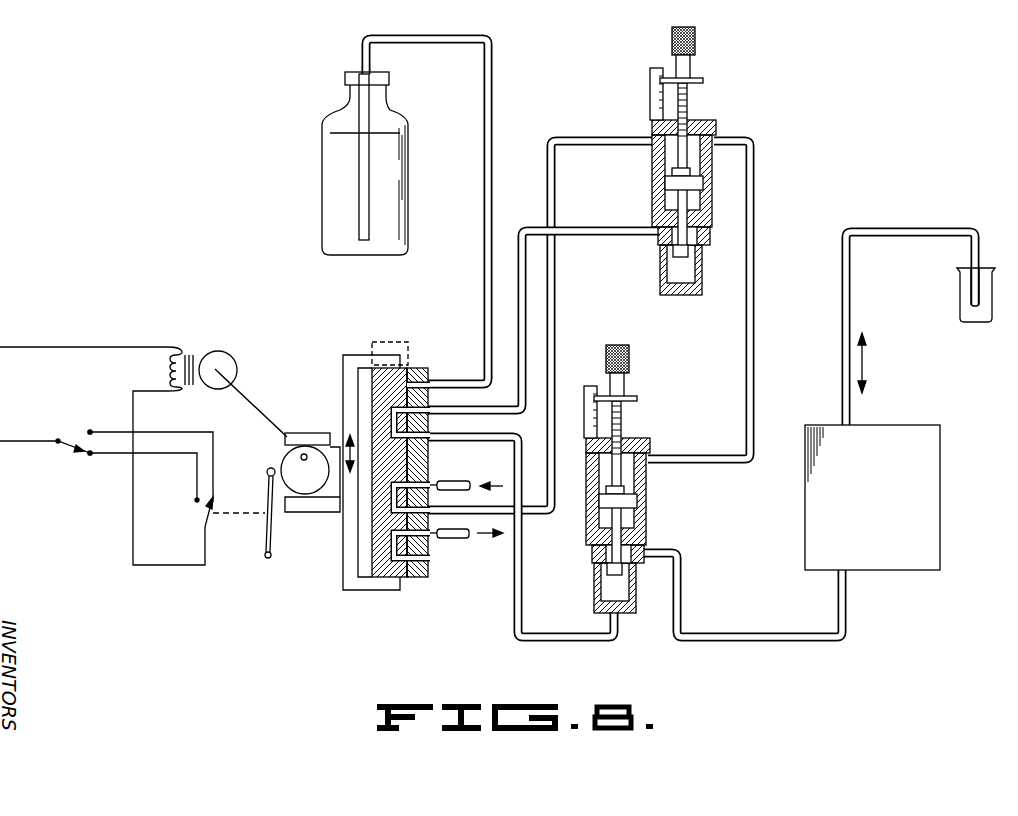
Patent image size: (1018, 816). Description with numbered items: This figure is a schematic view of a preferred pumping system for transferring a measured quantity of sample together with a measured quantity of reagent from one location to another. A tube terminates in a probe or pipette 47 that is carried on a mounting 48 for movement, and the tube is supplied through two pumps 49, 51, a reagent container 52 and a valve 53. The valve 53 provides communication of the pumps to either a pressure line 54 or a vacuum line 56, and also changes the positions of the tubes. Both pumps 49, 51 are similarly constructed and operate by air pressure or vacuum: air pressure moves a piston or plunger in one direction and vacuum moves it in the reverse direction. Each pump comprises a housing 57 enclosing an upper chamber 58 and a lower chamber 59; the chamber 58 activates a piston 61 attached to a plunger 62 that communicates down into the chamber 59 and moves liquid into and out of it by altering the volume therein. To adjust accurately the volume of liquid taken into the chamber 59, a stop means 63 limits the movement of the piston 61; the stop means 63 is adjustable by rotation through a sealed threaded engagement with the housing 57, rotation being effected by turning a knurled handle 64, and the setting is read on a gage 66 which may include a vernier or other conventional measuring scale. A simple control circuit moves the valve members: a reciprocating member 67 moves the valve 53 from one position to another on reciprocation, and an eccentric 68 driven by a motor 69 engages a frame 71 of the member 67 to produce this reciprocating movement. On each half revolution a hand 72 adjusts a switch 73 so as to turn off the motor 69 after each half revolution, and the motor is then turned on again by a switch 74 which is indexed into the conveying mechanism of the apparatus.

The probe or pipette 47 is at (975, 243).
The mounting 48 is at (930, 533).
The pump 49 is at (733, 120).
The pump 51 is at (650, 511).
The reagent container 52 is at (322, 172).
The valve 53 is at (338, 560).
The pressure line 54 is at (450, 482).
The vacuum line 56 is at (455, 542).
The housing 57 is at (652, 196).
The chamber 58 is at (668, 158).
The chamber 59 is at (668, 266).
The piston 61 is at (704, 184).
The plunger 62 is at (690, 252).
The stop means 63 is at (705, 122).
The knurled handle 64 is at (700, 40).
The gage 66 is at (652, 86).
The reciprocating member 67 is at (330, 445).
The eccentric 68 is at (300, 486).
The motor 69 is at (230, 359).
The frame 71 is at (295, 433).
The hand 72 is at (266, 520).
The switch 73 is at (197, 515).
The switch 74 is at (70, 447).